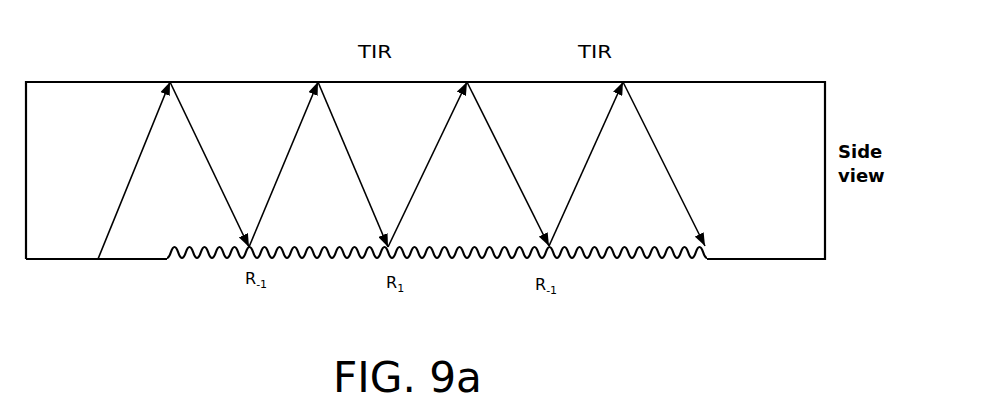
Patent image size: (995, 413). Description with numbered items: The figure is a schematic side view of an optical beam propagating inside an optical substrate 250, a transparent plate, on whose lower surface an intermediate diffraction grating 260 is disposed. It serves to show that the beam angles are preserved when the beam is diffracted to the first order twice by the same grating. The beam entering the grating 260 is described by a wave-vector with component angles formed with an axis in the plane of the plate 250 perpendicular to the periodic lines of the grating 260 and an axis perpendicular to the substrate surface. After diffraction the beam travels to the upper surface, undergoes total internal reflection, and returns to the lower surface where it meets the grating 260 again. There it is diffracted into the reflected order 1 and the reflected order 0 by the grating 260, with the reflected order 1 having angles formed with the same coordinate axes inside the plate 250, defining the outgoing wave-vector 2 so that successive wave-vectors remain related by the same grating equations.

The optical substrate 250 is at (205, 82).
The intermediate diffraction grating 260 is at (218, 258).
The reflected order 0 is at (173, 170).
The reflected order 1 is at (318, 164).
The diffracted light ray k2 2 is at (546, 164).